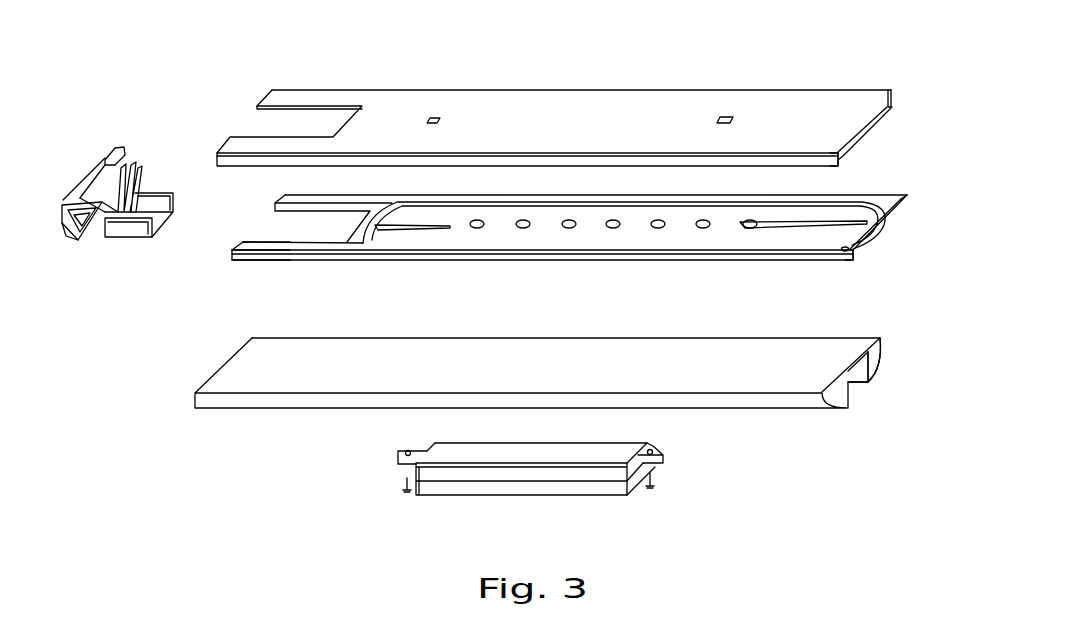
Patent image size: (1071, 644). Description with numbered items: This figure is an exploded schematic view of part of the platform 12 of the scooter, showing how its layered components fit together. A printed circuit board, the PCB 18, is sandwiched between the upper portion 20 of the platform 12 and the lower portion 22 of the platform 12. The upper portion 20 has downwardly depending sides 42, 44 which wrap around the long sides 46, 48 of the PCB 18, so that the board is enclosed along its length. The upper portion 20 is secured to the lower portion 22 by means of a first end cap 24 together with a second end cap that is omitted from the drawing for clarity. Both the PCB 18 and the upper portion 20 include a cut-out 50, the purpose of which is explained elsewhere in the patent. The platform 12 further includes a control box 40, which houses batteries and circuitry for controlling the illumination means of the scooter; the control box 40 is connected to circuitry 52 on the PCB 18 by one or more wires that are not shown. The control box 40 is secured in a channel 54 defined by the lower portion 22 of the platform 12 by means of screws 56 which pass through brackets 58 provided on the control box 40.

The platform 12 is at (707, 63).
The PCB 18 is at (897, 205).
The upper portion 20 is at (271, 90).
The lower portion 22 is at (822, 407).
The first end cap 24 is at (95, 183).
The control box 40 is at (513, 482).
The downwardly depending side 42 is at (893, 100).
The downwardly depending side 44 is at (840, 162).
The long side of the PCB 46 is at (907, 199).
The long side of the PCB 48 is at (843, 262).
The cut-out 50 is at (271, 228).
The circuitry 52 is at (287, 249).
The channel 54 is at (858, 373).
The screws 56 is at (403, 480).
The brackets 58 is at (405, 450).